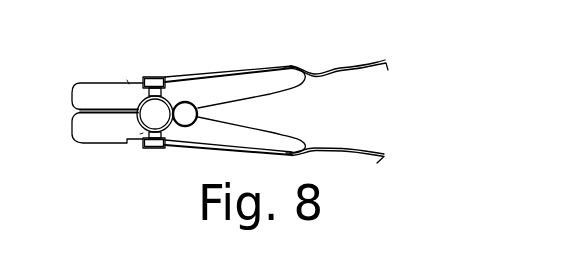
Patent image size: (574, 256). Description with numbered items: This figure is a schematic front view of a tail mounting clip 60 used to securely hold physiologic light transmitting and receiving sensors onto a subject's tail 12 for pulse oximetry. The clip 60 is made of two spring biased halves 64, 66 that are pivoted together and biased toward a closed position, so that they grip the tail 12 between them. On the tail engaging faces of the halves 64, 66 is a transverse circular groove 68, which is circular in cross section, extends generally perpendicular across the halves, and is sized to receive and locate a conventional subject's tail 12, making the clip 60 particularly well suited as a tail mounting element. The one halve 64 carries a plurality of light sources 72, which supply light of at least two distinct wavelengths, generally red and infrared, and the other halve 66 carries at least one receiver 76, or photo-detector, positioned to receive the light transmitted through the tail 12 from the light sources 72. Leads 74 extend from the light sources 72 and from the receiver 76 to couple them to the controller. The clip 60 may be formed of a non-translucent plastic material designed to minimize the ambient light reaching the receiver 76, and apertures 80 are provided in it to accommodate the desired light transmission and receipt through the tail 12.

The tail mounting clip 60 is at (84, 32).
The tail 12 is at (155, 114).
The transverse circular groove 68 is at (143, 100).
The halve 64 is at (182, 90).
The light sources 72 is at (157, 80).
The receiver 76 is at (127, 144).
The apertures 80 is at (128, 82).
The halve 66 is at (270, 130).
The leads 74 is at (351, 67).